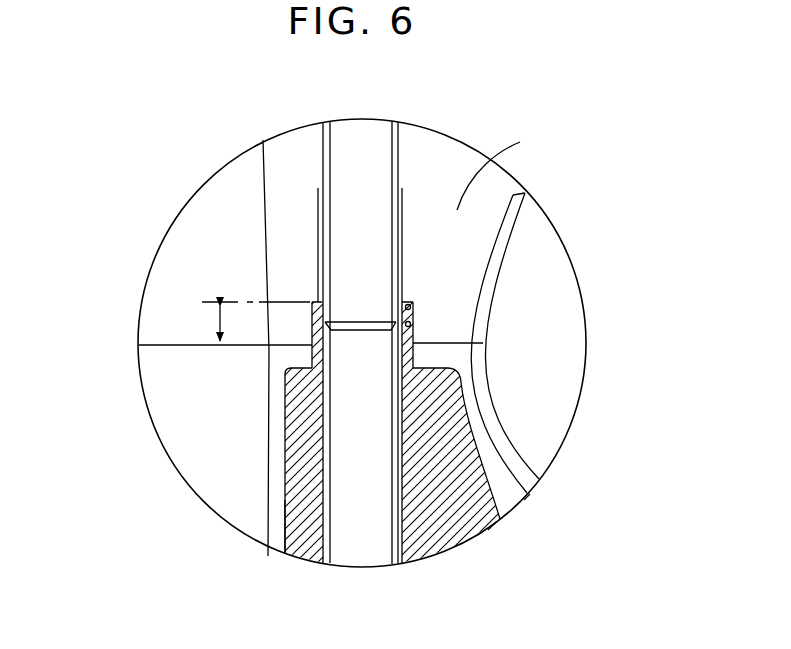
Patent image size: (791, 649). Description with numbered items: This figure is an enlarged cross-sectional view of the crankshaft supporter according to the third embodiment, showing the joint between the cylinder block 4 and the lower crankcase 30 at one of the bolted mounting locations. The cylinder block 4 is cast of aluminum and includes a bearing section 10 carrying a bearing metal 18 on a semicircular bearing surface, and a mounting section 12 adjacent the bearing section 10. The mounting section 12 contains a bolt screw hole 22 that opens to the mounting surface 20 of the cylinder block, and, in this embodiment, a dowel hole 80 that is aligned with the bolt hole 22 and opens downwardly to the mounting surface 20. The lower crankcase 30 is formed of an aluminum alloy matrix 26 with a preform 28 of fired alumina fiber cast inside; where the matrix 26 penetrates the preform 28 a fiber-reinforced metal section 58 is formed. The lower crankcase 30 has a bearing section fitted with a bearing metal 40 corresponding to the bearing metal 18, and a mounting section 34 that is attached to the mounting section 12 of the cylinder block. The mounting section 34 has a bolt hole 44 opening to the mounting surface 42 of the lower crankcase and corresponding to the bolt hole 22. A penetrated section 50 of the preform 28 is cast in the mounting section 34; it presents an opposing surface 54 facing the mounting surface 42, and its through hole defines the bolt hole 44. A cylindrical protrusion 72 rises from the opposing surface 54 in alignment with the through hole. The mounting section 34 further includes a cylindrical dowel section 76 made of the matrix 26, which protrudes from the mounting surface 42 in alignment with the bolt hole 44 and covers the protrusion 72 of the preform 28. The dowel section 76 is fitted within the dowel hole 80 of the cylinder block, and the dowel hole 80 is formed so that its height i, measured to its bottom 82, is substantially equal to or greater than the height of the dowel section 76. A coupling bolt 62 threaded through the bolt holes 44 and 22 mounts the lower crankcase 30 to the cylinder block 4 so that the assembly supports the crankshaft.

The cylinder block 4 is at (452, 132).
The bearing section 10 is at (502, 165).
The mounting section 12 is at (282, 148).
The bearing metal 18 is at (512, 230).
The mounting surface 20 is at (170, 347).
The bolt screw hole 22 is at (333, 130).
The matrix 26 is at (447, 353).
The preform 28 is at (459, 500).
The lower crankcase 30 is at (526, 501).
The mounting section 34 is at (273, 512).
The bearing metal 40 is at (507, 448).
The mounting surface 42 is at (158, 344).
The bolt hole 44 is at (322, 507).
The penetrated section 50 is at (308, 510).
The opposing surface 54 is at (448, 362).
The fiber-reinforced metal section 58 is at (492, 530).
The coupling bolt 62 is at (367, 137).
The cylindrical protrusion 72 is at (310, 350).
The dowel section 76 is at (311, 299).
The dowel hole 80 is at (415, 323).
The bottom 82 is at (415, 310).
The height of dowel hole i is at (220, 323).